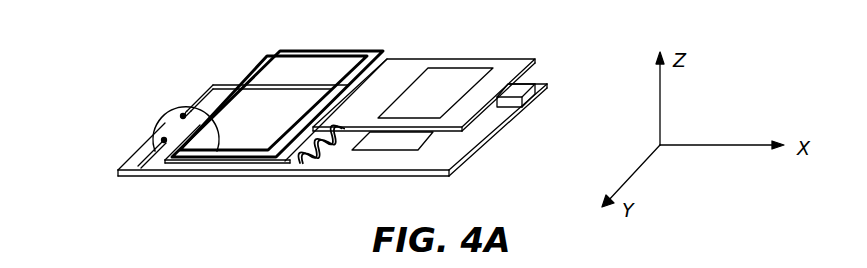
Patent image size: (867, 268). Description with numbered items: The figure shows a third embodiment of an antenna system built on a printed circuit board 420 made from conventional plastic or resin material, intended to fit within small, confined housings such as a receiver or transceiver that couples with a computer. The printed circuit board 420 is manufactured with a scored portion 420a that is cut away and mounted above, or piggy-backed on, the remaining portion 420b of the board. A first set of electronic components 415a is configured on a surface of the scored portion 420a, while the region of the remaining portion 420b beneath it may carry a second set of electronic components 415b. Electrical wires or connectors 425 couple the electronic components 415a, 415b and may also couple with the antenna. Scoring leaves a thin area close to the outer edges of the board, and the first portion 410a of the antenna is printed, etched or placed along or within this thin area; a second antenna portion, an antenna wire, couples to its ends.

The first portion of the antenna 410a is at (200, 177).
The first set of electronic components 415a is at (455, 68).
The second set of electronic components 415b is at (370, 150).
The printed circuit board 420 is at (503, 214).
The scored portion of the printed circuit board 420a is at (536, 61).
The remaining portion of the printed circuit board 420b is at (495, 130).
The electrical wires or connectors 425 is at (317, 167).